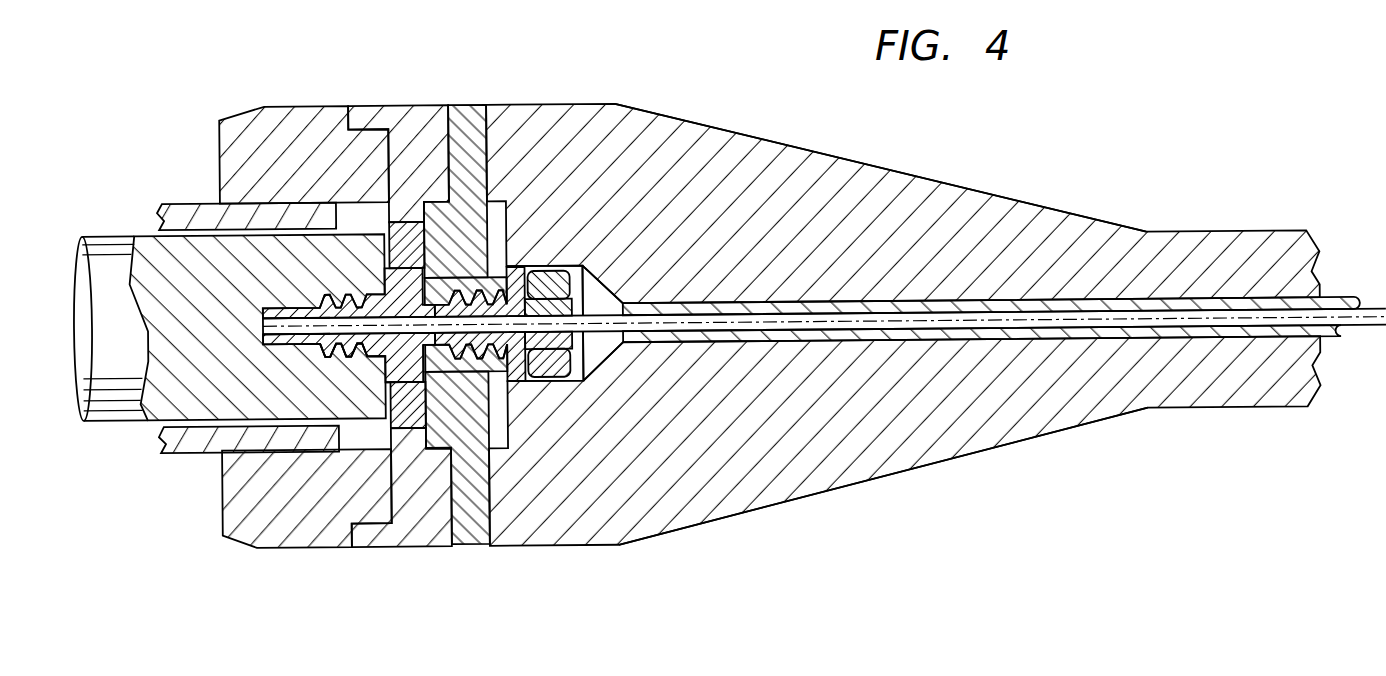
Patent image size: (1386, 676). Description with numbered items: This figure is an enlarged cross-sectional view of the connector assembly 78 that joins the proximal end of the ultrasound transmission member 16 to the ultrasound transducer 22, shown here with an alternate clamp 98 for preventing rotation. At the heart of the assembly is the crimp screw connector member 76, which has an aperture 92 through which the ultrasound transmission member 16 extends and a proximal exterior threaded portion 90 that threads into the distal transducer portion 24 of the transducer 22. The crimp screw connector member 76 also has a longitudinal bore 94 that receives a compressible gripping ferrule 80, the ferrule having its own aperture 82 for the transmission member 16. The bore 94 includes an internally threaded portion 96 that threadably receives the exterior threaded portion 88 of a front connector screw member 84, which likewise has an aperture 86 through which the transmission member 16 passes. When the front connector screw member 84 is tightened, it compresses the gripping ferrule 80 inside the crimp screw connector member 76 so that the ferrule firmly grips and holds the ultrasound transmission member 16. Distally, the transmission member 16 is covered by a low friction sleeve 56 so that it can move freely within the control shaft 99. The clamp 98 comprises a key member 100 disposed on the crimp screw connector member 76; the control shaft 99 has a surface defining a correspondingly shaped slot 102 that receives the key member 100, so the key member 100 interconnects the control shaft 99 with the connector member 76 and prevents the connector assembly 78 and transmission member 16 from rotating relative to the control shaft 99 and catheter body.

The ultrasound transmission member 16 is at (1378, 318).
The ultrasound transducer 22 is at (112, 233).
The distal transducer portion 24 is at (210, 243).
The low friction sleeve 56 is at (1078, 313).
The crimp screw connector member 76 is at (288, 350).
The connector assembly 78 is at (515, 368).
The compressible gripping ferrule 80 is at (497, 350).
The aperture 82 is at (458, 318).
The front connector screw member 84 is at (565, 343).
The aperture 86 is at (553, 318).
The exterior threaded portion 88 is at (507, 364).
The proximal exterior threaded portion 90 is at (325, 352).
The aperture 92 is at (293, 327).
The longitudinal bore 94 is at (392, 346).
The internally threaded portion 96 is at (563, 343).
The clamp 98 is at (397, 548).
The control shaft 99 is at (960, 193).
The key member 100 is at (407, 224).
The slot 102 is at (404, 234).